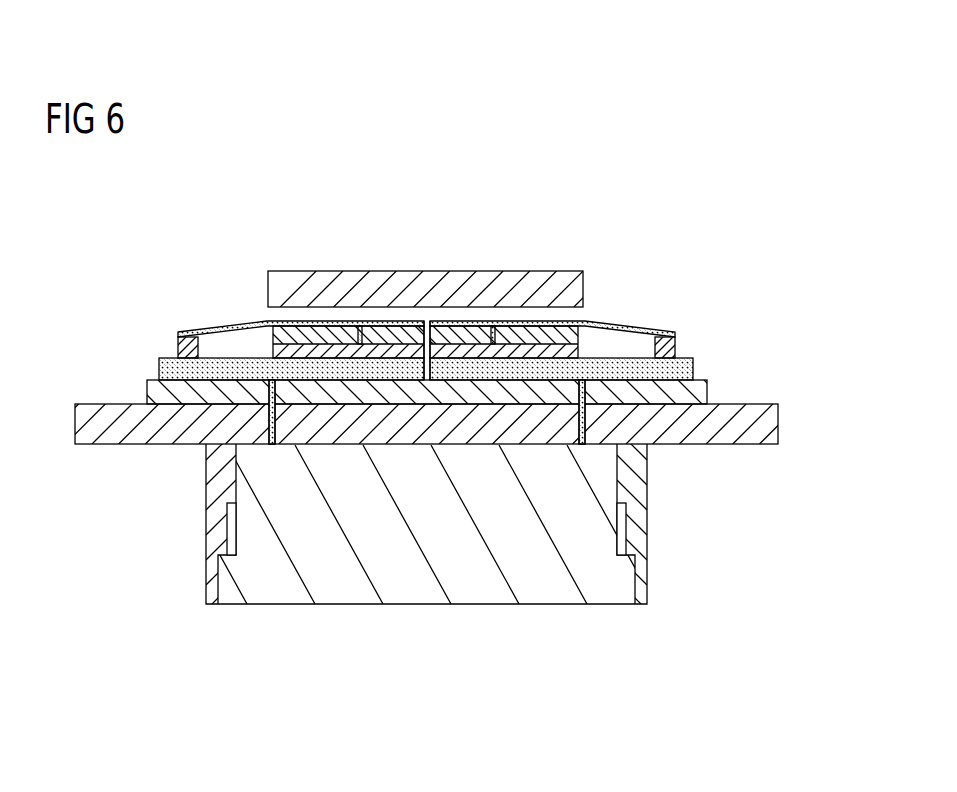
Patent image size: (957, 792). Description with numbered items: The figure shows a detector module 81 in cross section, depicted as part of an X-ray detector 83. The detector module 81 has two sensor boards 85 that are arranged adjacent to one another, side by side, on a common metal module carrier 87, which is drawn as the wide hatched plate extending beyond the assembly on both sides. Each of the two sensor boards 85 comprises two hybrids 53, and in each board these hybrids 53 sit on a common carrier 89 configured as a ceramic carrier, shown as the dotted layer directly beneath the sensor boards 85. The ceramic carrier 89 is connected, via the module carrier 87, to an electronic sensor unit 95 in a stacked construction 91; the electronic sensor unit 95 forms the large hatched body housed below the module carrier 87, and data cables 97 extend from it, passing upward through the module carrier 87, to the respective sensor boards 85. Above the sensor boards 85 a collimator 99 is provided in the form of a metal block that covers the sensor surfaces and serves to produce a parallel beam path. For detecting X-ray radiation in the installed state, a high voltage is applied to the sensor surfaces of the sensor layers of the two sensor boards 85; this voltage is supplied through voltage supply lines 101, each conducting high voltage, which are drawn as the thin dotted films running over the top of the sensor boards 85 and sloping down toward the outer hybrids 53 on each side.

The detector module 81 is at (550, 214).
The X-ray detector 83 is at (146, 244).
The sensor board 85 is at (251, 300).
The module carrier 87 is at (770, 427).
The carrier 89 is at (178, 370).
The stacked construction 91 is at (722, 534).
The electronic sensor unit 95 is at (487, 592).
The data cable 97 is at (269, 420).
The collimator 99 is at (433, 278).
The voltage supply line 101 is at (227, 327).
The hybrid 53 is at (258, 348).